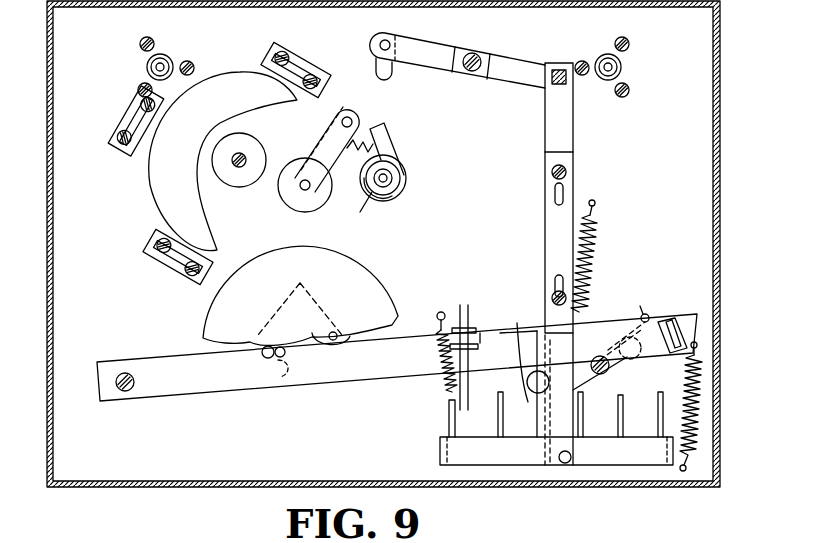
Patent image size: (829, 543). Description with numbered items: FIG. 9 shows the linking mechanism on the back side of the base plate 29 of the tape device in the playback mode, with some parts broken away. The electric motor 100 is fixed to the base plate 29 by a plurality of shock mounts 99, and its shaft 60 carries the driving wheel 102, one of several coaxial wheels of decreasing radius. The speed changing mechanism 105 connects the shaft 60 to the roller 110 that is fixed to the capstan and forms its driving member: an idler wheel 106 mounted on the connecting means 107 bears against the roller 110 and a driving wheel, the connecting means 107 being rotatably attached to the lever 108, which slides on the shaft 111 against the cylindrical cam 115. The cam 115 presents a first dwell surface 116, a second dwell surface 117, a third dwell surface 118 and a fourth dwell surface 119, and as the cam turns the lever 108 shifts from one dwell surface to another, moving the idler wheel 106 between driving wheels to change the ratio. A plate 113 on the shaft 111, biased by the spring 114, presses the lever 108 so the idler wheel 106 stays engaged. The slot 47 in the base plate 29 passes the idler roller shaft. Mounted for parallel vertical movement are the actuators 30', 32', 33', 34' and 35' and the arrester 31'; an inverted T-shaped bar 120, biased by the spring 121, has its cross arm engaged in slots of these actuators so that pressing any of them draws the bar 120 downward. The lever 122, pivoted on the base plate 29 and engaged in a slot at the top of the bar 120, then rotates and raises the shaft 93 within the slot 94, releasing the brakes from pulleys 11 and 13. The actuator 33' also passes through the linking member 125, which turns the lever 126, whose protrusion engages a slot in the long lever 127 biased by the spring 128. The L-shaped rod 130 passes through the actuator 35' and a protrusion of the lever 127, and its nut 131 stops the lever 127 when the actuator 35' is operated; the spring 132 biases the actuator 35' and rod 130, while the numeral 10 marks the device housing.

The housing frame 10 is at (716, 186).
The shaft bearing 11 is at (146, 67).
The shaft bearing 13 is at (622, 65).
The base plate 29 is at (690, 128).
The actuator 30' is at (647, 414).
The arrester 31' is at (625, 427).
The actuator 32' is at (597, 411).
The actuator 33' is at (556, 449).
The actuator 34' is at (498, 408).
The actuator 35' is at (428, 418).
The slot 47 is at (268, 367).
The shaft 60 is at (243, 157).
The shaft 93 is at (383, 40).
The slot 94 is at (388, 77).
The shock mounts 99 is at (278, 48).
The electric motor 100 is at (231, 80).
The driving wheel 102 is at (233, 188).
The speed changing mechanism 105 is at (353, 107).
The idler wheel 106 is at (302, 233).
The connecting means 107 is at (330, 142).
The lever 108 is at (372, 141).
The roller 110 is at (386, 294).
The shaft 111 is at (387, 201).
The plate 113 is at (388, 192).
The spring 114 is at (342, 115).
The cylindrical cam 115 is at (407, 177).
The first dwell surface 116 is at (378, 204).
The second dwell surface 117 is at (395, 191).
The third dwell surface 118 is at (404, 166).
The fourth dwell surface 119 is at (356, 204).
The inverted T-shaped bar 120 is at (575, 186).
The spring 121 is at (593, 242).
The lever 122 is at (511, 80).
The linking member 125 is at (518, 341).
The lever 126 is at (620, 362).
The lever 127 is at (700, 319).
The spring 128 is at (701, 401).
The L-shaped rod 130 is at (466, 309).
The nut 131 is at (471, 331).
The spring 132 is at (440, 368).